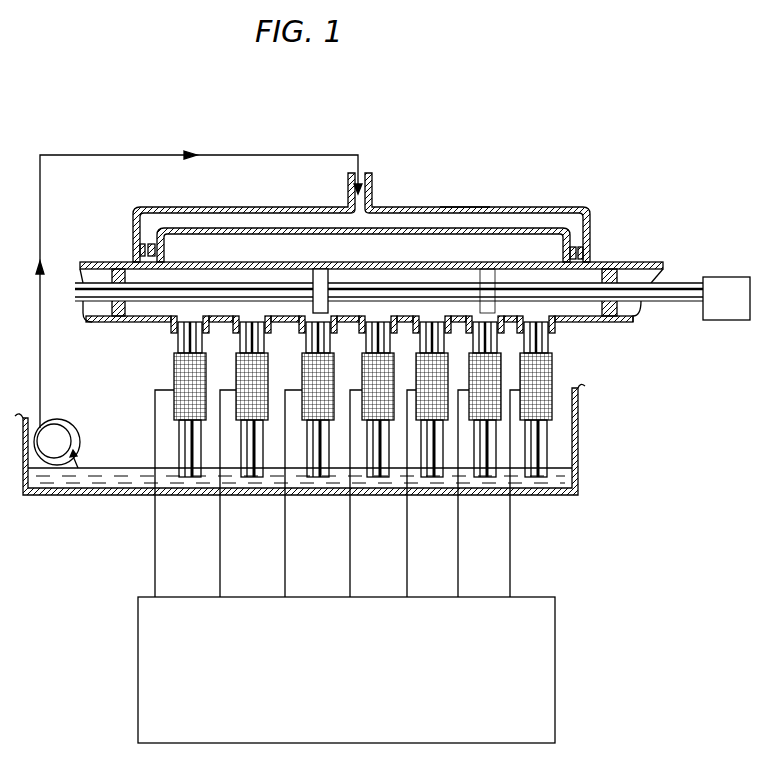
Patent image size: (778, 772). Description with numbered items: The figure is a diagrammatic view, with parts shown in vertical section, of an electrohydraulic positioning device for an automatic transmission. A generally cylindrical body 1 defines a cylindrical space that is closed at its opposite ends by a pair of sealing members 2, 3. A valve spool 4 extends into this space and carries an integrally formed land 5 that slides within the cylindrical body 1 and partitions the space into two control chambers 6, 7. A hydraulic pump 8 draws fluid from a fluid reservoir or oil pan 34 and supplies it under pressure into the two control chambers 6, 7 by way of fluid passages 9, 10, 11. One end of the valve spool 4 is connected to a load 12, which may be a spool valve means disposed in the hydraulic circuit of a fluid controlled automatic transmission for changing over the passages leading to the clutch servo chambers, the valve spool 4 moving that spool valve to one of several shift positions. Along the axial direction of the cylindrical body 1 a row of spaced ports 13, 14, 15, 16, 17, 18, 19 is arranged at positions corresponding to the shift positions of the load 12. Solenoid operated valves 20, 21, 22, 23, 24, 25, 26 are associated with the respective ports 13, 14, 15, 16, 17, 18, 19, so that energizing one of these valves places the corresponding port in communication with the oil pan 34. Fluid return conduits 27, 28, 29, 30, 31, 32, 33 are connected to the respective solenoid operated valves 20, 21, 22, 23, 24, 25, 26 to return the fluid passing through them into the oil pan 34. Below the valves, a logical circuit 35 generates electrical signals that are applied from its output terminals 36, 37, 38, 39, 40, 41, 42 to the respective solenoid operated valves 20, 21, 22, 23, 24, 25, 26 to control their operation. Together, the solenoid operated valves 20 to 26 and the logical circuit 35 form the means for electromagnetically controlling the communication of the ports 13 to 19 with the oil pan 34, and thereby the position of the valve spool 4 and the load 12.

The cylindrical body 1 is at (403, 252).
The sealing member 2 is at (117, 264).
The sealing member 3 is at (610, 268).
The valve spool 4 is at (679, 298).
The land 5 is at (320, 280).
The control chamber 6 is at (234, 263).
The control chamber 7 is at (496, 278).
The hydraulic pump 8 is at (76, 438).
The fluid passage 9 is at (152, 155).
The fluid passage 10 is at (258, 214).
The fluid passage 11 is at (463, 214).
The load 12 is at (726, 285).
The port 13 is at (174, 329).
The port 14 is at (236, 328).
The port 15 is at (302, 328).
The port 16 is at (362, 326).
The port 17 is at (437, 326).
The port 18 is at (474, 336).
The port 19 is at (529, 336).
The solenoid operated valve 20 is at (174, 380).
The solenoid operated valve 21 is at (236, 384).
The solenoid operated valve 22 is at (302, 388).
The solenoid operated valve 23 is at (362, 364).
The solenoid operated valve 24 is at (417, 365).
The solenoid operated valve 25 is at (500, 362).
The solenoid operated valve 26 is at (552, 388).
The fluid return conduit 27 is at (202, 460).
The fluid return conduit 28 is at (264, 460).
The fluid return conduit 29 is at (330, 460).
The fluid return conduit 30 is at (390, 460).
The fluid return conduit 31 is at (444, 460).
The fluid return conduit 32 is at (497, 460).
The fluid return conduit 33 is at (548, 460).
The oil pan 34 is at (578, 421).
The logical circuit 35 is at (556, 623).
The output terminal 36 is at (155, 597).
The output terminal 37 is at (220, 597).
The output terminal 38 is at (285, 597).
The output terminal 39 is at (350, 597).
The output terminal 40 is at (407, 597).
The output terminal 41 is at (458, 597).
The output terminal 42 is at (510, 597).